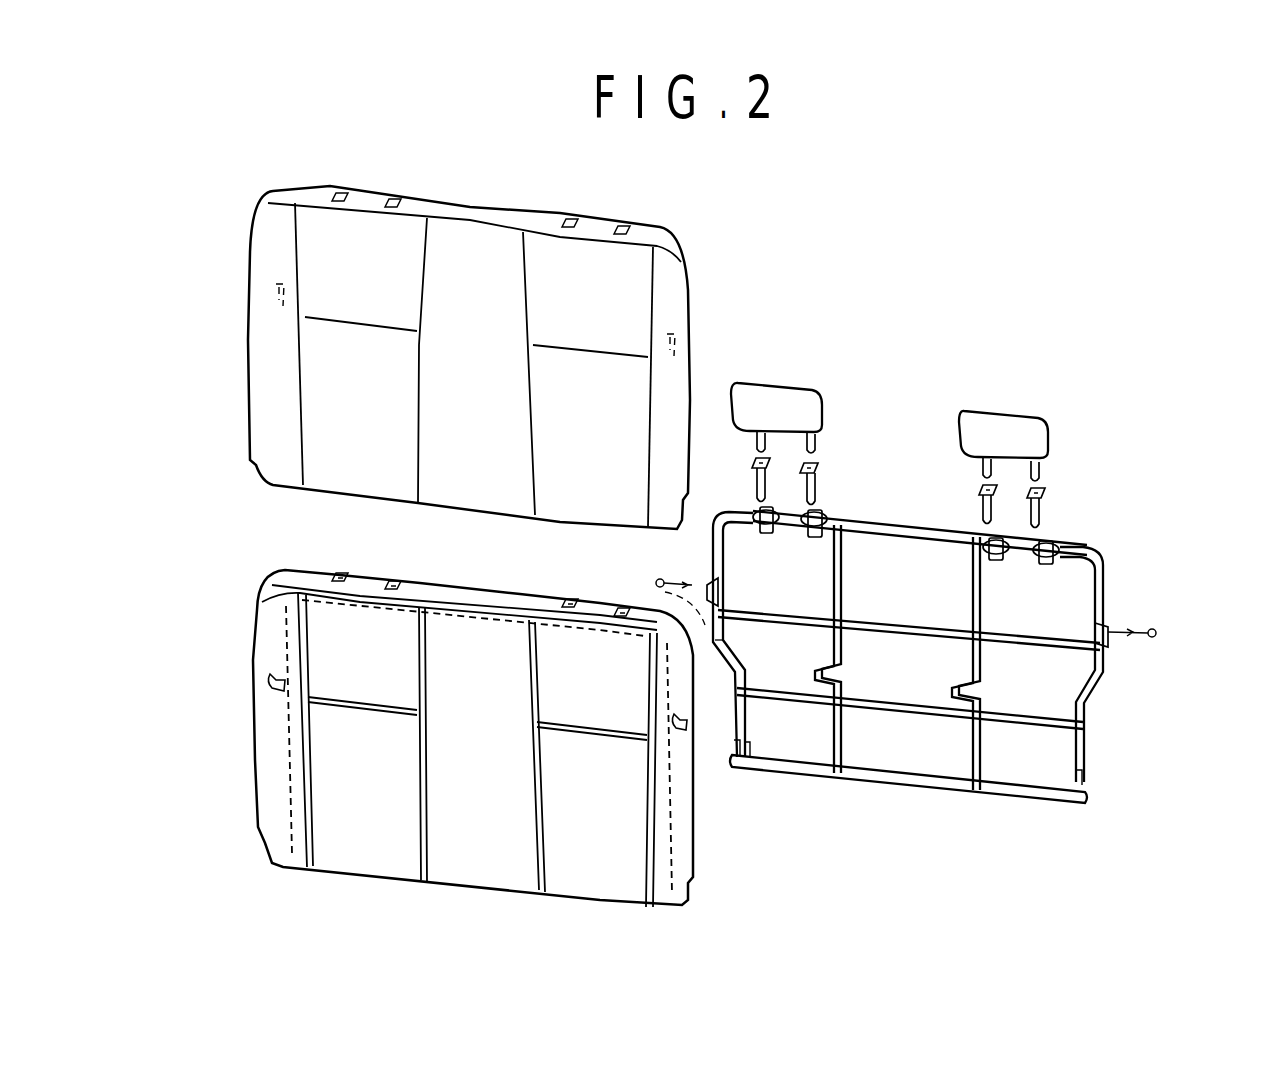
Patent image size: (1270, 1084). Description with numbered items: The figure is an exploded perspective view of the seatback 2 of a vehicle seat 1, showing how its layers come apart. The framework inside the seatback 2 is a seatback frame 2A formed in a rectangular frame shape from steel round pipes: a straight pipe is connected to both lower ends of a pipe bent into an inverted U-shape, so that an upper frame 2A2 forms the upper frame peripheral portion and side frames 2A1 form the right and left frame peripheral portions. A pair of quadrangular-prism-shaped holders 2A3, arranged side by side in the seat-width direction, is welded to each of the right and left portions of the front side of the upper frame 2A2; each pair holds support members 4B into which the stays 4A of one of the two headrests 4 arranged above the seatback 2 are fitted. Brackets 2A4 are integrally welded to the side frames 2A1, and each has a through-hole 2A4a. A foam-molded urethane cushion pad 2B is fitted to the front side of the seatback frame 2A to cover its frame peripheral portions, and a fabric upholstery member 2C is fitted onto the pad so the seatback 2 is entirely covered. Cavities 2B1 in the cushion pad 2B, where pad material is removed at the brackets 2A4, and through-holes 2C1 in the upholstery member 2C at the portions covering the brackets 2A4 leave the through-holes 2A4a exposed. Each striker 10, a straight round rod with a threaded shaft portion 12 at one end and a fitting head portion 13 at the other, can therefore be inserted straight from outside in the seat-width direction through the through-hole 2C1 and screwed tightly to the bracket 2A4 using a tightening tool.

The vehicle seat 1 is at (955, 316).
The seatback 2 is at (1090, 529).
The seatback frame 2A is at (1100, 553).
The side frame 2A1 is at (716, 524).
The upper frame 2A2 is at (898, 533).
The holder 2A3 is at (767, 534).
The bracket 2A4 is at (757, 587).
The through-hole 2A4a is at (724, 628).
The cushion pad 2B is at (474, 655).
The cavity 2B1 is at (270, 678).
The upholstery member 2C is at (480, 256).
The through-hole 2C1 is at (272, 296).
The headrest 4 is at (797, 400).
The stay 4A is at (762, 438).
The support member 4B is at (770, 494).
The striker 10 is at (656, 586).
The threaded shaft portion 12 is at (1130, 637).
The fitting head portion 13 is at (660, 579).